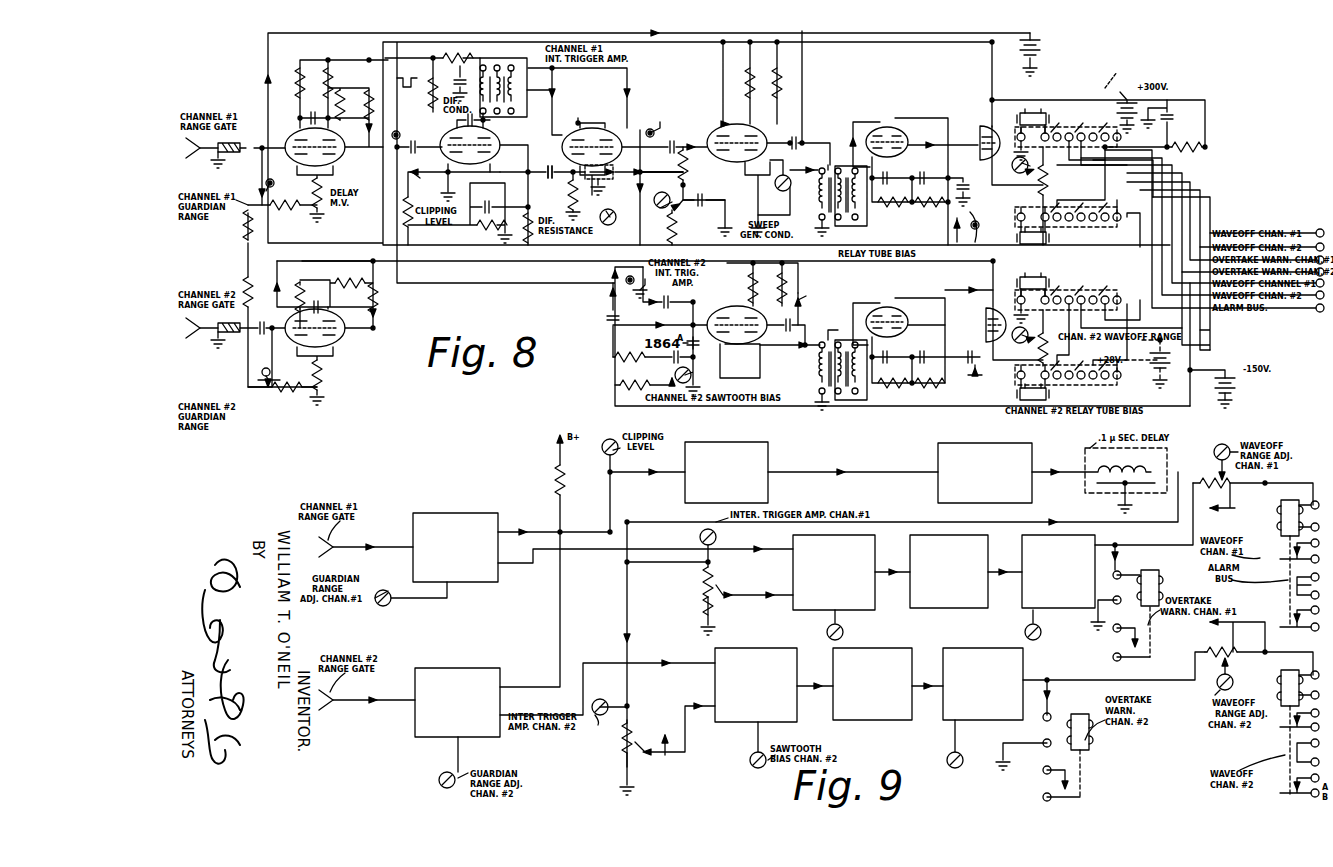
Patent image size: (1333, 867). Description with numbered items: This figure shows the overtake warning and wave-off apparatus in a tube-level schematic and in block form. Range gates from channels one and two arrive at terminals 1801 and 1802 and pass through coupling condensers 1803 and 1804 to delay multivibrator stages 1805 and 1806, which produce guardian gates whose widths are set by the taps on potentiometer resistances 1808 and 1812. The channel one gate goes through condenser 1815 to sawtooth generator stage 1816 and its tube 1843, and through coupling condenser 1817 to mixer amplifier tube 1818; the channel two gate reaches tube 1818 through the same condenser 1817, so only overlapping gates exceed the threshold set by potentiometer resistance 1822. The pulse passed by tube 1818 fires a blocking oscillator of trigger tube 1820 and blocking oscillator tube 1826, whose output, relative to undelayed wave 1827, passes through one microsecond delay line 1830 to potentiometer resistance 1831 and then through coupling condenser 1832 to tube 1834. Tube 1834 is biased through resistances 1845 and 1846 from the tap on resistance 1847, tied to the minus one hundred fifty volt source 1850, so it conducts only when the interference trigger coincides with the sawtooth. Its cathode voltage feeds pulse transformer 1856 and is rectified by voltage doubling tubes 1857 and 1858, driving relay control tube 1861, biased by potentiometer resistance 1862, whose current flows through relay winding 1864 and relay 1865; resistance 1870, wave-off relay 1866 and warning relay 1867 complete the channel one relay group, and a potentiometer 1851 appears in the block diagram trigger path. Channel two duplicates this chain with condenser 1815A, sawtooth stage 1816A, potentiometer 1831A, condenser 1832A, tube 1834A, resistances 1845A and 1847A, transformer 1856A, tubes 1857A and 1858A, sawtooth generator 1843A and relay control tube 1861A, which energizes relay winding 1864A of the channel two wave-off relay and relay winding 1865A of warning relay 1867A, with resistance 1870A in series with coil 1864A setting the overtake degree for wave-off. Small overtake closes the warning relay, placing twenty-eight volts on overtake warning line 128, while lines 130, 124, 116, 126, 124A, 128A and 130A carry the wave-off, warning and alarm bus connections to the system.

In FIG. 8, the terminal 1801 is at (210, 148).
In FIG. 8, the terminal 1802 is at (208, 328).
In FIG. 8, the coupling condenser 1803 is at (285, 137).
In FIG. 8, the coupling condenser 1804 is at (258, 328).
In FIG. 8, the delay multivibrator stage 1805 is at (340, 157).
In FIG. 9, the delay multivibrator stage 1805 is at (468, 503).
In FIG. 8, the delay multivibrator stage 1806 is at (340, 345).
In FIG. 9, the delay multivibrator stage 1806 is at (466, 668).
In FIG. 8, the potentiometer resistance 1808 is at (285, 208).
In FIG. 8, the potentiometer resistance 1812 is at (282, 396).
In FIG. 8, the condenser 1815 is at (813, 145).
In FIG. 8, the sawtooth generator stage 1816 is at (712, 108).
In FIG. 8, the coupling condenser 1817 is at (420, 137).
In FIG. 8, the mixer amplifier tube 1818 is at (455, 137).
In FIG. 8, the trigger tube 1820 is at (488, 163).
In FIG. 9, the trigger tube 1820 is at (768, 450).
In FIG. 8, the potentiometer resistance 1822 is at (420, 160).
In FIG. 8, the blocking oscillator tube 1826 is at (575, 122).
In FIG. 8, the voltage wave 1827 is at (508, 152).
In FIG. 8, the one microsecond delay line 1830 is at (612, 185).
In FIG. 8, the potentiometer resistance 1831 is at (661, 170).
In FIG. 8, the coupling condenser 1832 is at (675, 140).
In FIG. 8, the tube 1834 is at (712, 197).
In FIG. 9, the tube 1834 is at (938, 462).
In FIG. 8, the sawtooth voltage generator stage 1843 is at (775, 150).
In FIG. 9, the sawtooth voltage generator stage 1843 is at (878, 547).
In FIG. 8, the resistance 1845 is at (683, 175).
In FIG. 8, the resistance 1846 is at (690, 185).
In FIG. 8, the resistance 1847 is at (676, 236).
In FIG. 9, the potentiometer 1851 is at (716, 573).
In FIG. 8, the pulse transformer 1856 is at (833, 152).
In FIG. 8, the tube 1857 is at (872, 127).
In FIG. 9, the tube 1857 is at (990, 548).
In FIG. 8, the tube 1858 is at (905, 140).
In FIG. 8, the relay control tube 1861 is at (978, 130).
In FIG. 9, the relay control tube 1861 is at (1108, 545).
In FIG. 8, the potentiometer resistance 1862 is at (1006, 276).
In FIG. 8, the relay winding 1864 is at (1040, 112).
In FIG. 8, the relay 1865 is at (1048, 245).
In FIG. 8, the relay assembly 1866 is at (1105, 88).
In FIG. 8, the relay 1867 is at (1118, 224).
In FIG. 8, the waveoff range potentiometer 1870 is at (1047, 180).
In FIG. 8, the waveoff lead 130 is at (1105, 165).
In FIG. 8, the overtake warning lead 124 is at (1133, 165).
In FIG. 8, the overtake warning line 128 is at (1215, 204).
In FIG. 8, the lead 116 is at (1250, 308).
In FIG. 8, the alarm bus lead 126 is at (1298, 308).
In FIG. 8, the minus 150 volt source 1850 is at (1237, 386).
In FIG. 9, the minus 150 volt source 1850 is at (1085, 470).
In FIG. 8, the coupling capacitor channel 2 1815A is at (800, 310).
In FIG. 8, the channel 2 sawtooth generator tube 1816A is at (735, 310).
In FIG. 8, the channel 2 trigger line 1831A is at (647, 283).
In FIG. 9, the channel 2 trigger line 1831A is at (636, 738).
In FIG. 8, the channel 2 coupling capacitor 1832A is at (610, 318).
In FIG. 8, the channel 2 sweep capacitor 1834A is at (712, 372).
In FIG. 8, the channel 2 resistor 1845A is at (628, 360).
In FIG. 8, the channel 2 sawtooth bias potentiometer 1847A is at (668, 382).
In FIG. 8, the channel 2 transformer 1856A is at (830, 338).
In FIG. 8, the channel 2 voltage doubler peak rectifier 1857A is at (885, 305).
In FIG. 9, the channel 2 voltage doubler peak rectifier 1857A is at (890, 648).
In FIG. 8, the channel 2 rectifier output lead 1858A is at (915, 325).
In FIG. 8, the tube 1861A is at (980, 315).
In FIG. 9, the tube 1861A is at (980, 648).
In FIG. 8, the relay winding 1864A is at (1040, 280).
In FIG. 8, the relay winding 1865A is at (1046, 398).
In FIG. 8, the channel No. 2 warning relay 1867A is at (1122, 384).
In FIG. 8, the resistance 1870A is at (1040, 350).
In FIG. 8, the channel 2 overtake warning lead 124A is at (1140, 308).
In FIG. 8, the channel 2 waveoff lead 128A is at (1210, 350).
In FIG. 8, the channel 2 waveoff lead 130A is at (1200, 328).
In FIG. 9, the channel 2 sawtooth generator 1843A is at (752, 648).